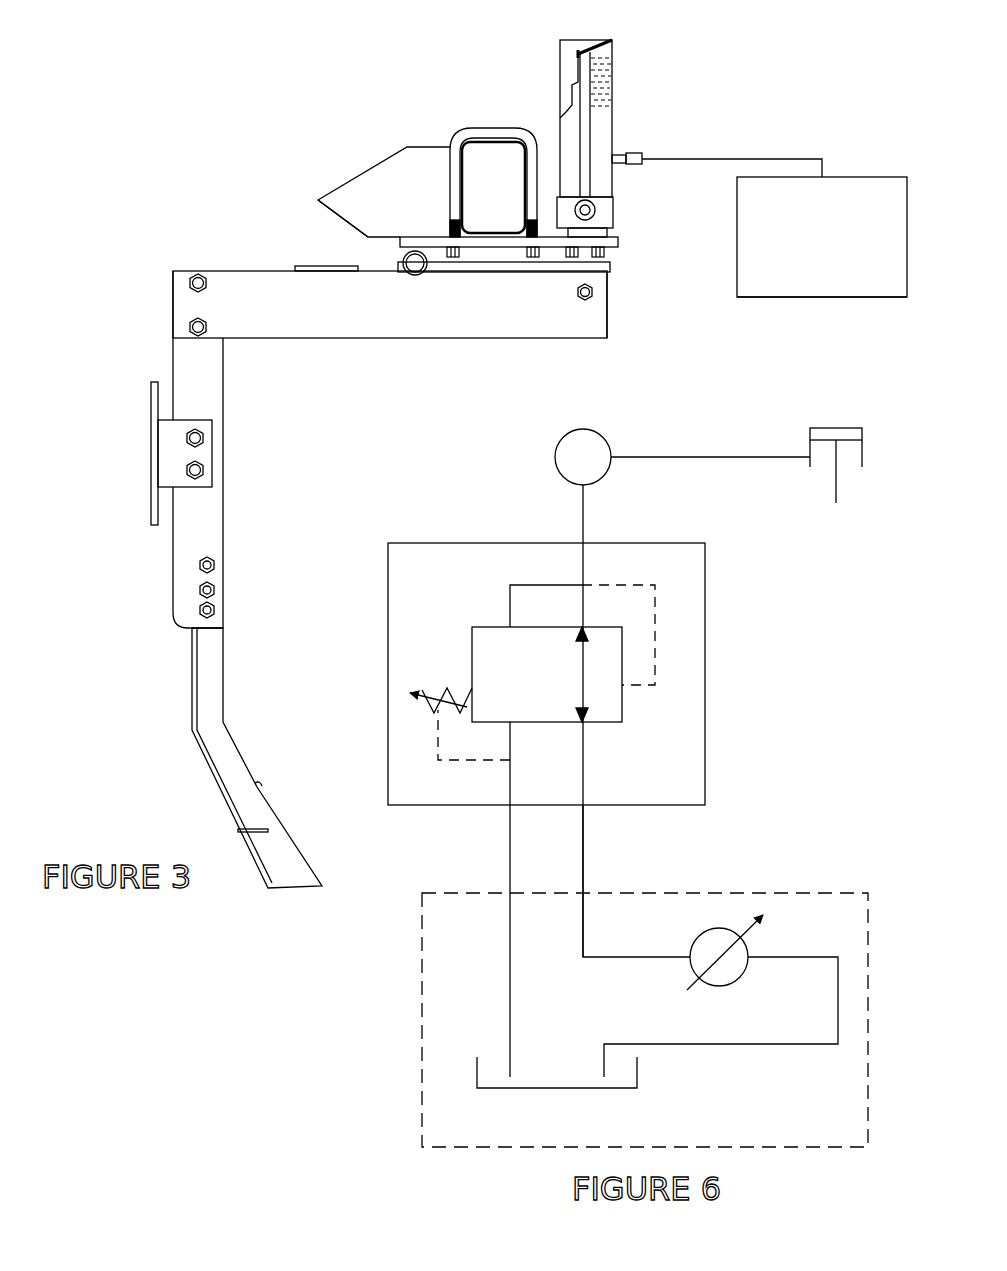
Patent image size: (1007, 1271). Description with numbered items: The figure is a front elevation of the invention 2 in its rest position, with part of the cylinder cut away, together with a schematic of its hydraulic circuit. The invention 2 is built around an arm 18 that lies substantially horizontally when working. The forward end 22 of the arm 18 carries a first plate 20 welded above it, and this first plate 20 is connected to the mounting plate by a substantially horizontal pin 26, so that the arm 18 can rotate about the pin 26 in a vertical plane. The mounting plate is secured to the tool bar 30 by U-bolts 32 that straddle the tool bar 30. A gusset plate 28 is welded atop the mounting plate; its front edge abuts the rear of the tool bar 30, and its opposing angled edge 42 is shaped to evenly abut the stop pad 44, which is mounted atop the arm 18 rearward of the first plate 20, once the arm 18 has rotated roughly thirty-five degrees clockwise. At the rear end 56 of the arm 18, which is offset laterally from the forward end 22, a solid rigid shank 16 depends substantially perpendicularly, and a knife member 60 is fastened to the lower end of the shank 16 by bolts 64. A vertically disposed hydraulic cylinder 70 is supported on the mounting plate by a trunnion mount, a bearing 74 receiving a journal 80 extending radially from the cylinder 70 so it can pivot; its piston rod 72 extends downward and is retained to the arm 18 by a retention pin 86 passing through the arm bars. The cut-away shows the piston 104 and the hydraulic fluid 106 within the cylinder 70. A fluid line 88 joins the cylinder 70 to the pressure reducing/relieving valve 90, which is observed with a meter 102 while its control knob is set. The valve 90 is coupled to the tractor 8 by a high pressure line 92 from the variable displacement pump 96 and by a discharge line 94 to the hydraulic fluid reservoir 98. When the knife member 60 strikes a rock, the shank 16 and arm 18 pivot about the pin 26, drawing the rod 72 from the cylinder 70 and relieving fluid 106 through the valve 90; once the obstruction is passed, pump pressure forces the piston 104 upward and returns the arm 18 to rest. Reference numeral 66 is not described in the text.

In FIG. 3, the invention 2 is at (114, 364).
In FIG. 6, the tractor 8 is at (651, 999).
In FIG. 3, the shank 16 is at (249, 483).
In FIG. 3, the arm 18 is at (390, 339).
In FIG. 3, the first plate 20 is at (558, 274).
In FIG. 3, the forward end 22 is at (658, 325).
In FIG. 3, the pin 26 is at (462, 324).
In FIG. 3, the gusset plate 28 is at (372, 175).
In FIG. 3, the tool bar 30 is at (452, 132).
In FIG. 3, the U-bolt 32 is at (446, 154).
In FIG. 3, the angled edge 42 is at (313, 221).
In FIG. 3, the stop pad 44 is at (290, 250).
In FIG. 3, the rear end 56 is at (111, 287).
In FIG. 3, the knife member 60 is at (257, 758).
In FIG. 3, the bolts 64 is at (261, 565).
In FIG. 3, the mounting plate 66 is at (128, 453).
In FIG. 6, the hydraulic cylinder 70 is at (856, 434).
In FIG. 3, the piston rod 72 is at (637, 151).
In FIG. 3, the bearing 74 is at (635, 138).
In FIG. 3, the journal 80 is at (628, 204).
In FIG. 3, the retention pin 86 is at (643, 314).
In FIG. 3, the fluid line 88 is at (774, 198).
In FIG. 3, the pressure reducing/relieving valve 90 is at (822, 328).
In FIG. 6, the pressure reducing/relieving valve 90 is at (609, 721).
In FIG. 6, the high pressure line 92 is at (636, 881).
In FIG. 6, the discharge line 94 is at (461, 899).
In FIG. 6, the variable displacement pump 96 is at (721, 996).
In FIG. 6, the hydraulic fluid reservoir 98 is at (557, 1098).
In FIG. 6, the meter 102 is at (682, 476).
In FIG. 3, the piston 104 is at (636, 29).
In FIG. 3, the hydraulic fluid 106 is at (647, 82).